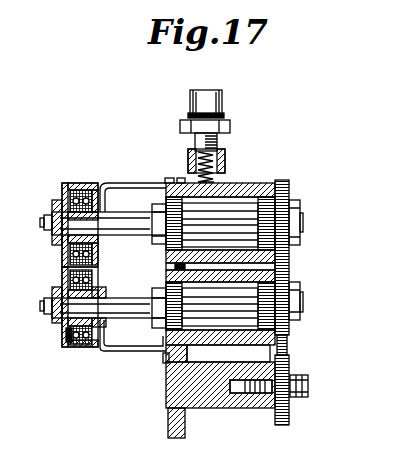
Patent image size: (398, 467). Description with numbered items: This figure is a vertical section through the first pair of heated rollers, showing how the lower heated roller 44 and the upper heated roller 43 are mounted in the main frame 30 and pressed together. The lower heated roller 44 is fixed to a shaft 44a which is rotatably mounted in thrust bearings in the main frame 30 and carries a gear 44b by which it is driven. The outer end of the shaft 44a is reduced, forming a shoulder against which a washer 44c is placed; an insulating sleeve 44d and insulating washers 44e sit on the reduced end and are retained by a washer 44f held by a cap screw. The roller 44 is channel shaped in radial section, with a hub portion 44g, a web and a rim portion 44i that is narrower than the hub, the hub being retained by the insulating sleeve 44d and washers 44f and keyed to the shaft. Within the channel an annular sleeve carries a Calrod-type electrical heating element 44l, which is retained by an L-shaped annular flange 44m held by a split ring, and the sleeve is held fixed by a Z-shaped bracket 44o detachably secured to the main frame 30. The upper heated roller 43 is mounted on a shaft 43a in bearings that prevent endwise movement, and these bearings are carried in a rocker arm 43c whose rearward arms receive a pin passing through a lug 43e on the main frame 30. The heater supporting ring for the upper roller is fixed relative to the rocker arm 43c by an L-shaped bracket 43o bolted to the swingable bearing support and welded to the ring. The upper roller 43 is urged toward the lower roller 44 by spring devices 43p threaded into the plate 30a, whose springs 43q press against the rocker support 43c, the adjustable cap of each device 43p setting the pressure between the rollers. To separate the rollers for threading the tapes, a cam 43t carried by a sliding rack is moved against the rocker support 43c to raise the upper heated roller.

The main frame 30 is at (200, 310).
The plate 30a is at (231, 154).
The upper heated roller 43 is at (63, 210).
The shaft 43a is at (155, 218).
The rocker arm 43c is at (164, 169).
The lug 43e is at (303, 302).
The L-shaped bracket 43o is at (131, 183).
The spring device 43p is at (229, 119).
The spring 43q is at (237, 167).
The cam 43t is at (220, 305).
The heated roller 44 is at (59, 307).
The shaft 44a is at (109, 313).
The gear 44b is at (310, 330).
The washer 44c is at (119, 291).
The insulating sleeve 44d is at (37, 297).
The insulating washers 44e is at (105, 314).
The washer 44f is at (30, 302).
The hub portion 44g is at (100, 283).
The rim portion 44i is at (75, 351).
The electrical heating element 44l is at (50, 342).
The L-shaped annular flange 44m is at (102, 272).
The Z-shaped bracket 44o is at (134, 355).